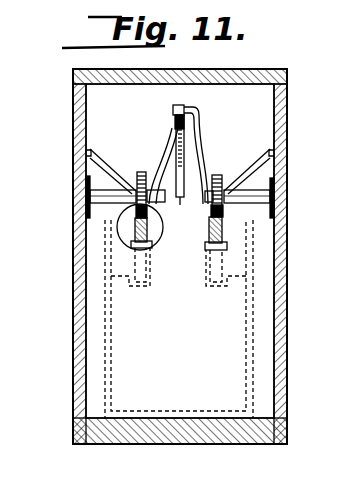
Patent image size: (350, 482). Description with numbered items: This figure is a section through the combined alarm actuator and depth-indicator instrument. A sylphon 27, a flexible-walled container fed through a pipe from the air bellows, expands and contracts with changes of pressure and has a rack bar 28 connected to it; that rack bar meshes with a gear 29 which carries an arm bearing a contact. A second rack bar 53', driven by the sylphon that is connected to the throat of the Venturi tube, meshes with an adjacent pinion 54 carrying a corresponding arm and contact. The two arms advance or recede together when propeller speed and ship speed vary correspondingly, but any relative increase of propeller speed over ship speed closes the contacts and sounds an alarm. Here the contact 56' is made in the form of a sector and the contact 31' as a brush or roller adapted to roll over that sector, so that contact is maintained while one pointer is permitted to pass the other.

The sylphon 27 is at (118, 222).
The rack bar 28 is at (136, 244).
The gear 29 is at (218, 175).
The contact 31' is at (193, 110).
The rack bar 53' is at (206, 245).
The pinion 54 is at (140, 172).
The contact 56' is at (182, 179).